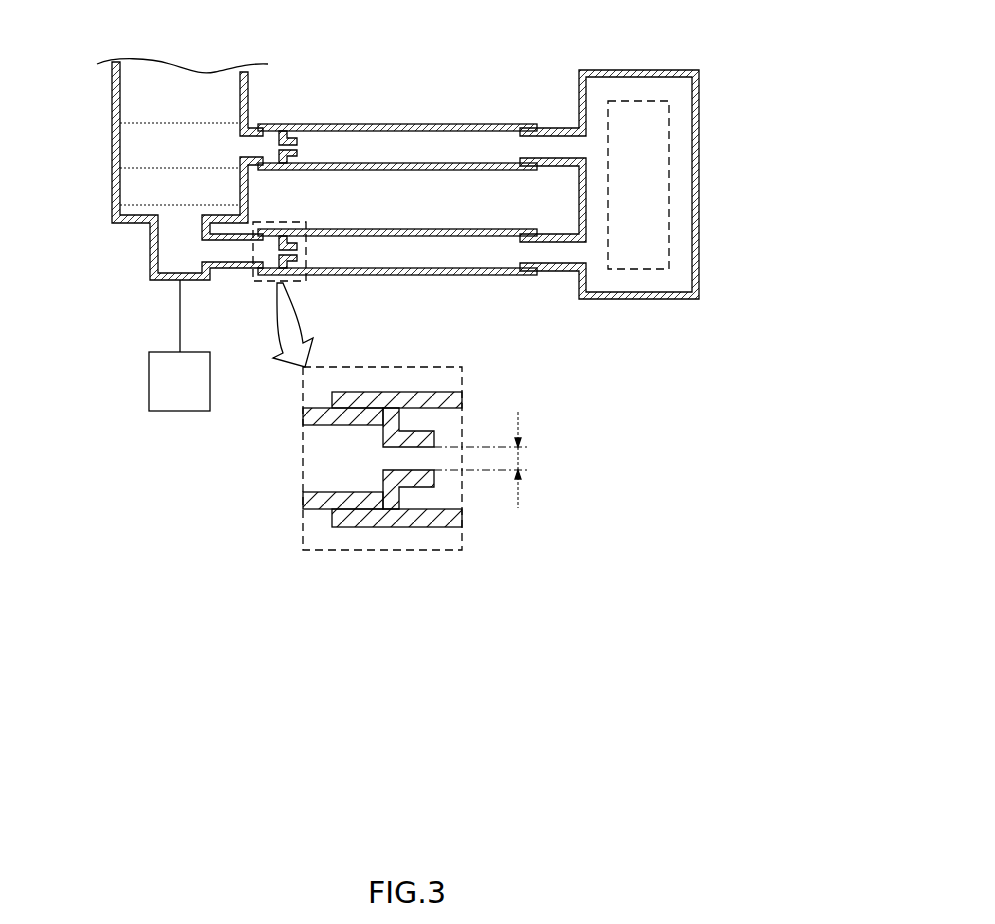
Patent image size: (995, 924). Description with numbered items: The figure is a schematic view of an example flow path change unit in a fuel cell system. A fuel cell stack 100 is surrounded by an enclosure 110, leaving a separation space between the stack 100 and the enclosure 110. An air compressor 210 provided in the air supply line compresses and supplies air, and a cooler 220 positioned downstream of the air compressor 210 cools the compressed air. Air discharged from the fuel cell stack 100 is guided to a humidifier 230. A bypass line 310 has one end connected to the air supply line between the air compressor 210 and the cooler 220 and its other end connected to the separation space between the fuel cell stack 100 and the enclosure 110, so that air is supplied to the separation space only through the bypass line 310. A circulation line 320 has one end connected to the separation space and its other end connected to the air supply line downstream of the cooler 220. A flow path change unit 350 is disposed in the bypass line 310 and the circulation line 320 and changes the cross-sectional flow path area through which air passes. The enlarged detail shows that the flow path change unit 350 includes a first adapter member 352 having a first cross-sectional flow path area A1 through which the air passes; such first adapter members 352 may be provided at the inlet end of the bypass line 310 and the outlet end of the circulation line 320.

The fuel cell stack 100 is at (668, 185).
The enclosure 110 is at (638, 70).
The air compressor 210 is at (179, 412).
The cooler 220 is at (152, 157).
The humidifier 230 is at (152, 138).
The bypass line 310 is at (428, 277).
The circulation line 320 is at (413, 123).
The flow path change unit 350 is at (425, 420).
The first adapter member 352 is at (418, 488).
The first cross-sectional flow path area A1 is at (497, 460).